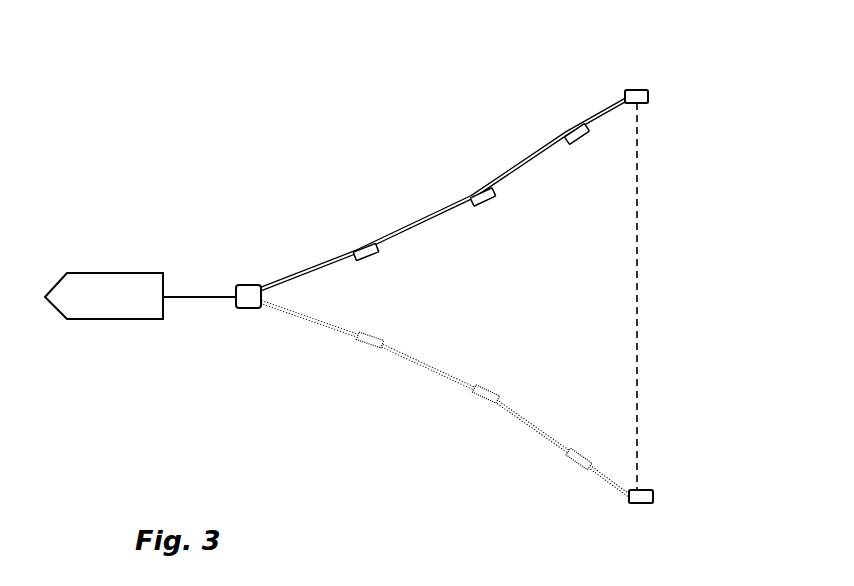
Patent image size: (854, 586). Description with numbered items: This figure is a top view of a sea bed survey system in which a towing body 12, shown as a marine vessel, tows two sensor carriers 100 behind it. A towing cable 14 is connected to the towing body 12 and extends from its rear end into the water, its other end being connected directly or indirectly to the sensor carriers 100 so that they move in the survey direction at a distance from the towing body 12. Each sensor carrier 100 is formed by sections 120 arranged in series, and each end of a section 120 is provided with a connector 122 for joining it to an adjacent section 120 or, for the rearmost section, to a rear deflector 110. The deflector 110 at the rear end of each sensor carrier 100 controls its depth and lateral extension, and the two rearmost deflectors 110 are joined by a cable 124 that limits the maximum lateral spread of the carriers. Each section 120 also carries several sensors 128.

The towing body 12 is at (107, 272).
The towing cable 14 is at (215, 297).
The sensor carrier 100 is at (312, 157).
The deflector 110 is at (250, 285).
The section 120 is at (322, 267).
The connector 122 is at (365, 342).
The cable 124 is at (637, 318).
The sensors 128 is at (253, 306).